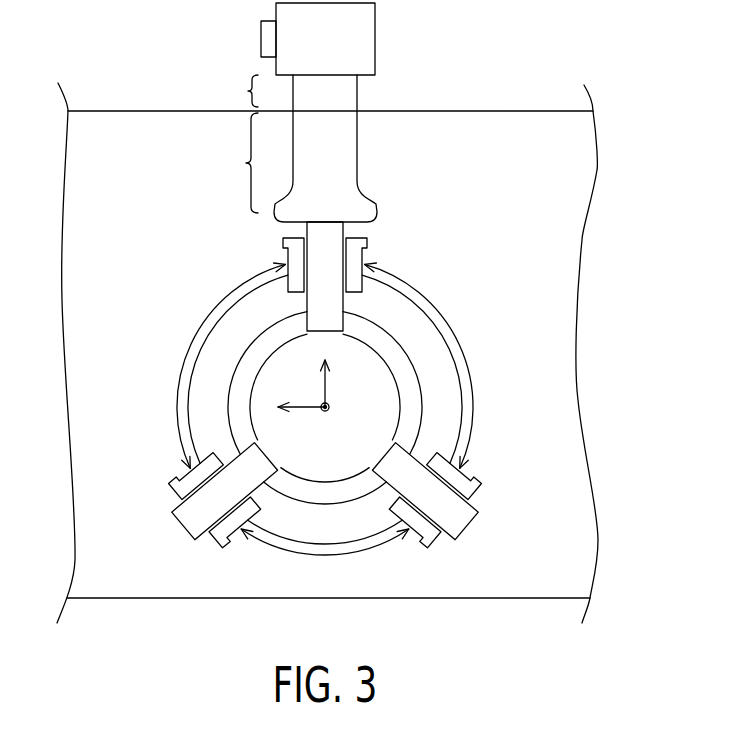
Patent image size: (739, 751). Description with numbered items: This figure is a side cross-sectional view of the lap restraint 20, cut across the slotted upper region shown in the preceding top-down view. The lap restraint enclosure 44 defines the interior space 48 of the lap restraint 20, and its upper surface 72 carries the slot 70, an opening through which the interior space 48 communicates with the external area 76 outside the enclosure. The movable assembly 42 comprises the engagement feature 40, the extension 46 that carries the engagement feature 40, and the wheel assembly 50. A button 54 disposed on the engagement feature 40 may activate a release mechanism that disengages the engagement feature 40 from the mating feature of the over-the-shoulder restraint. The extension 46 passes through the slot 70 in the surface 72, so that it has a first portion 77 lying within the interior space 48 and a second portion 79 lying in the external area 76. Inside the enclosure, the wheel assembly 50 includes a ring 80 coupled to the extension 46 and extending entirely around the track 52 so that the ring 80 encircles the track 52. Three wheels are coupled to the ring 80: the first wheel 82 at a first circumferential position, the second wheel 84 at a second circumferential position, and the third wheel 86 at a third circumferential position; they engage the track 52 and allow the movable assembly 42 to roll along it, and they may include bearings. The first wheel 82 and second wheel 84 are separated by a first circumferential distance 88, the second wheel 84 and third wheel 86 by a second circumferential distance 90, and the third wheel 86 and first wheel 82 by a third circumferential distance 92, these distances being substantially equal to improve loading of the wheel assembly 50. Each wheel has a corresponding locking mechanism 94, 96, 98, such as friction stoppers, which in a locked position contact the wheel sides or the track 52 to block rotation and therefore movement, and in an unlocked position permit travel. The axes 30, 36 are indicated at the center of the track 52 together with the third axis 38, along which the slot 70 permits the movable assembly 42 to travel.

The lap restraint 20 is at (100, 106).
The engagement feature 40 is at (377, 34).
The button 54 is at (260, 34).
The extension 46 is at (358, 130).
The movable assembly 42 is at (390, 65).
The slot 70 is at (368, 104).
The surface 72 is at (505, 110).
The lap restraint enclosure 44 is at (552, 110).
The external area 76 is at (492, 30).
The interior space 48 is at (522, 547).
The second portion 79 is at (249, 90).
The first portion 77 is at (246, 163).
The first wheel 82 is at (327, 268).
The locking mechanism 94 is at (293, 260).
The wheel assembly 50 is at (438, 297).
The track 52 is at (257, 345).
The ring 80 is at (452, 404).
The first circumferential distance 88 is at (460, 343).
The third circumferential distance 92 is at (188, 343).
The second circumferential distance 90 is at (327, 553).
The third wheel 86 is at (195, 523).
The second wheel 84 is at (458, 525).
The locking mechanism 98 is at (170, 492).
The locking mechanism 96 is at (477, 492).
The first axis 30 is at (328, 390).
The second axis 36 is at (308, 412).
The third axis 38 is at (330, 411).